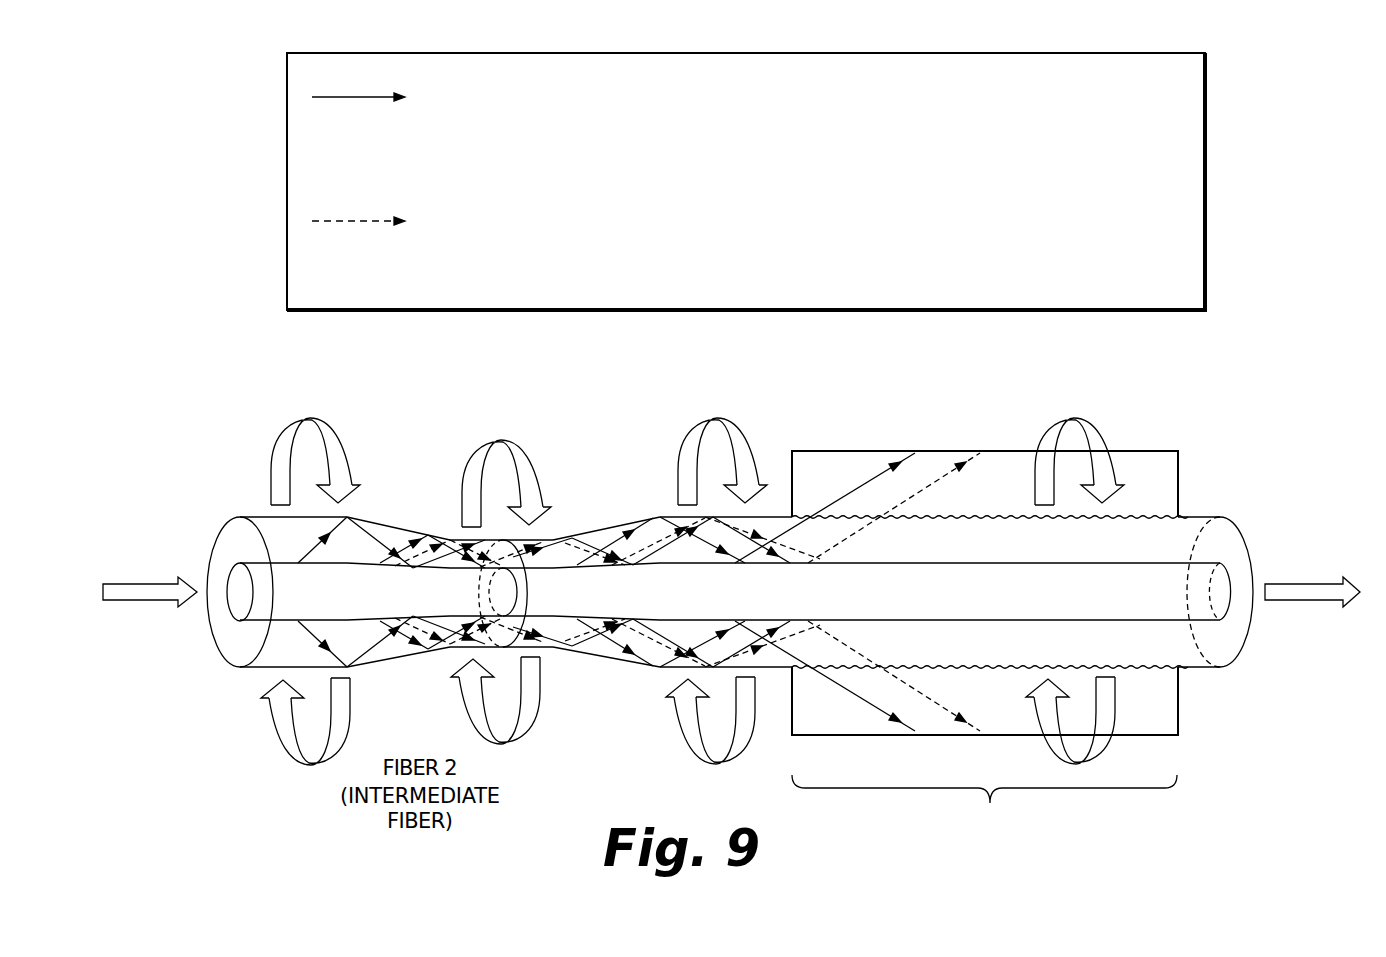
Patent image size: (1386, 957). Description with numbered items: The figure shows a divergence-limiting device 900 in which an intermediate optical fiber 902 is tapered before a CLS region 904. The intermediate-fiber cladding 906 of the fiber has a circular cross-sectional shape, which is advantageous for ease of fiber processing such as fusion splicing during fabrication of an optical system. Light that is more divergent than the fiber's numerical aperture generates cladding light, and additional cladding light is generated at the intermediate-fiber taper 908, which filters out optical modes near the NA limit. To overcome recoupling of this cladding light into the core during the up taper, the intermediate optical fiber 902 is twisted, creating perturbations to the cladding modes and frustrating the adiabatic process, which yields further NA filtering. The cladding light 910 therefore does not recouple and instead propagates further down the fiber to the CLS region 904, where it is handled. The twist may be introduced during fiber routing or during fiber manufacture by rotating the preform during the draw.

The divergence-limiting device 900 is at (1275, 136).
The intermediate optical fiber 902 is at (712, 587).
The CLS region 904 is at (1006, 858).
The intermediate-fiber cladding 906 is at (235, 542).
The intermediate-fiber taper 908 is at (438, 506).
The cladding light 910 is at (617, 531).